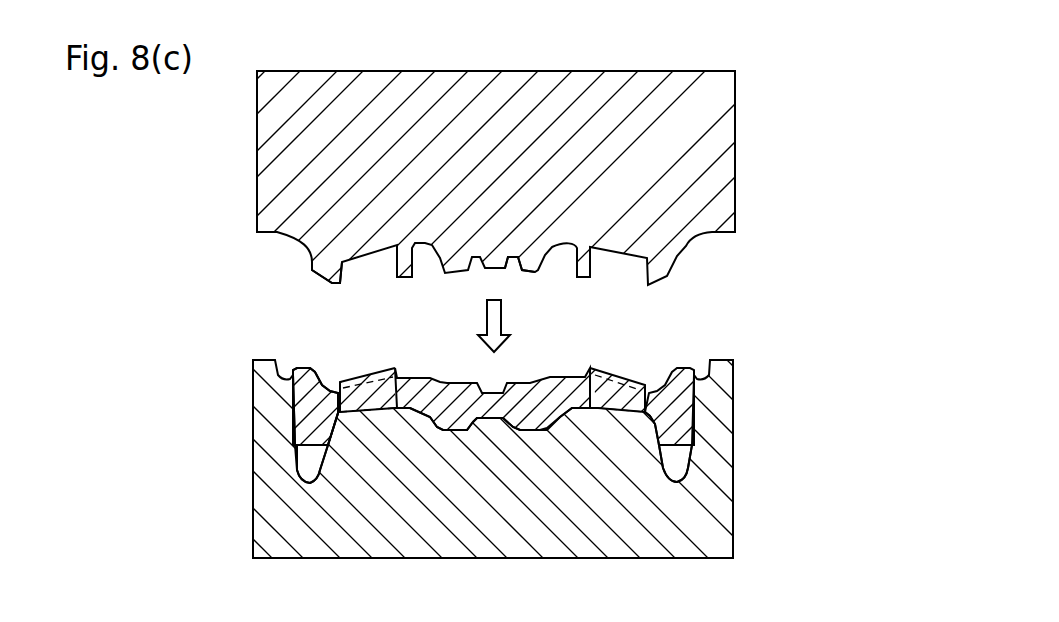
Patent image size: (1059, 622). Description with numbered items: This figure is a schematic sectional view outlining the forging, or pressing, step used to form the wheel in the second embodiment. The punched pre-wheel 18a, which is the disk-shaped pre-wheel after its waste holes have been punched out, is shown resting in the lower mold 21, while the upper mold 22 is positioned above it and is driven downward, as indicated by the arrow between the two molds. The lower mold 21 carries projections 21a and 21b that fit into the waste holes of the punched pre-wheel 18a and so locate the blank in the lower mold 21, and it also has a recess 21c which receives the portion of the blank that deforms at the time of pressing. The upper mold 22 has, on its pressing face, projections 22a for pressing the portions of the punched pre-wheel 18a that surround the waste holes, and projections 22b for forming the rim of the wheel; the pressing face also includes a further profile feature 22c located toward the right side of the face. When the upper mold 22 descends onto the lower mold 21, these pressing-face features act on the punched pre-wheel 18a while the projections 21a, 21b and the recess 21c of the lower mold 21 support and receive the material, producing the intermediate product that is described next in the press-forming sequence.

The upper mold 22 is at (732, 113).
The projections for pressing portions around the waste holes 22a is at (397, 277).
The projections for forming the rim 22b is at (322, 268).
The recess of upper die 22c is at (535, 272).
The lower mold 21 is at (733, 509).
The projection 21a is at (352, 375).
The projection 21b is at (217, 406).
The recess 21c is at (303, 462).
The punched pre-wheel 18a is at (567, 364).